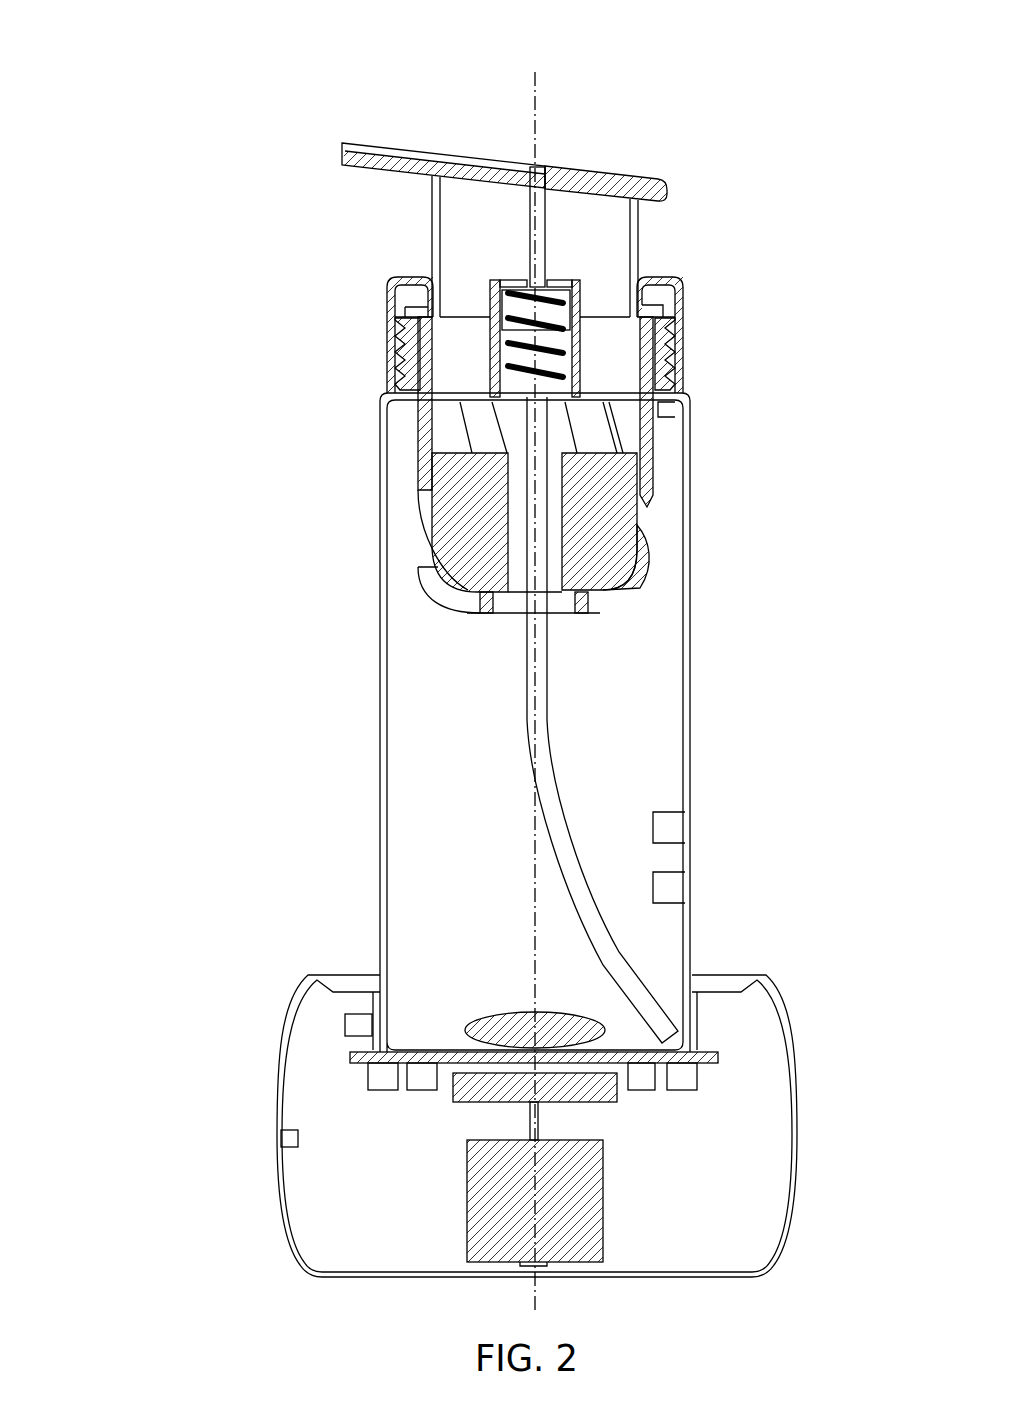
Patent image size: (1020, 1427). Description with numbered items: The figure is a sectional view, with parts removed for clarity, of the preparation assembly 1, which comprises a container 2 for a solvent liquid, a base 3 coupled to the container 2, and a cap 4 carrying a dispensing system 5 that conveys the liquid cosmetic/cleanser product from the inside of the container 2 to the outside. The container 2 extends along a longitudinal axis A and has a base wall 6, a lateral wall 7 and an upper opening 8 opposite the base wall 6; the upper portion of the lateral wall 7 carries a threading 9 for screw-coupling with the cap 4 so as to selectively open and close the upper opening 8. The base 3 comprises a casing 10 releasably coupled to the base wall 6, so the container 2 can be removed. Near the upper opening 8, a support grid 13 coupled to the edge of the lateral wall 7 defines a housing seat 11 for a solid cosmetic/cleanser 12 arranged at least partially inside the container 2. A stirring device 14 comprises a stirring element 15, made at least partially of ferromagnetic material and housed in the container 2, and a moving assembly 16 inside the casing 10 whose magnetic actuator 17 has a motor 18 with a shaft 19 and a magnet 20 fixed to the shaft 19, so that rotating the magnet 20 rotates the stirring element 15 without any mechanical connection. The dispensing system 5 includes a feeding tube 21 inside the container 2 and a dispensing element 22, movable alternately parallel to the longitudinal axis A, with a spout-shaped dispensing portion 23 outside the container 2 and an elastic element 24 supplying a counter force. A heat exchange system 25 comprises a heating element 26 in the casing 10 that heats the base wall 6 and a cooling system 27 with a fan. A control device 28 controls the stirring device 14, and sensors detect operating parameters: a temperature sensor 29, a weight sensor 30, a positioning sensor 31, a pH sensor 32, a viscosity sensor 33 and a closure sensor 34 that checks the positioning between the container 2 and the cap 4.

The preparation assembly 1 is at (245, 220).
The container 2 is at (348, 692).
The base 3 is at (198, 1117).
The cap 4 is at (680, 147).
The dispensing system 5 is at (695, 258).
The base wall 6 is at (612, 1050).
The lateral wall 7 is at (380, 753).
The upper opening 8 is at (593, 335).
The threading 9 is at (400, 352).
The casing 10 is at (278, 1216).
The housing seat 11 is at (405, 462).
The solid cosmetic/cleanser 12 is at (598, 522).
The support grid 13 is at (650, 422).
The stirring device 14 is at (418, 1023).
The stirring element 15 is at (507, 1022).
The moving assembly 16 is at (630, 1220).
The magnetic actuator 17 is at (443, 1202).
The motor 18 is at (562, 1214).
The shaft 19 is at (535, 1112).
The magnet 20 is at (470, 1086).
The feeding tube 21 is at (545, 738).
The dispensing element 22 is at (477, 98).
The dispensing portion 23 is at (398, 148).
The elastic element 24 is at (493, 293).
The heat exchange system 25 is at (635, 1125).
The heating element 26 is at (428, 1078).
The cooling system 27 is at (636, 1084).
The control device 28 is at (283, 1138).
The temperature sensor 29 is at (680, 1077).
The weight sensor 30 is at (380, 1077).
The positioning sensor 31 is at (352, 1025).
The pH sensor 32 is at (668, 884).
The viscosity sensor 33 is at (676, 822).
The closure sensor 34 is at (677, 408).
The longitudinal axis A is at (535, 135).